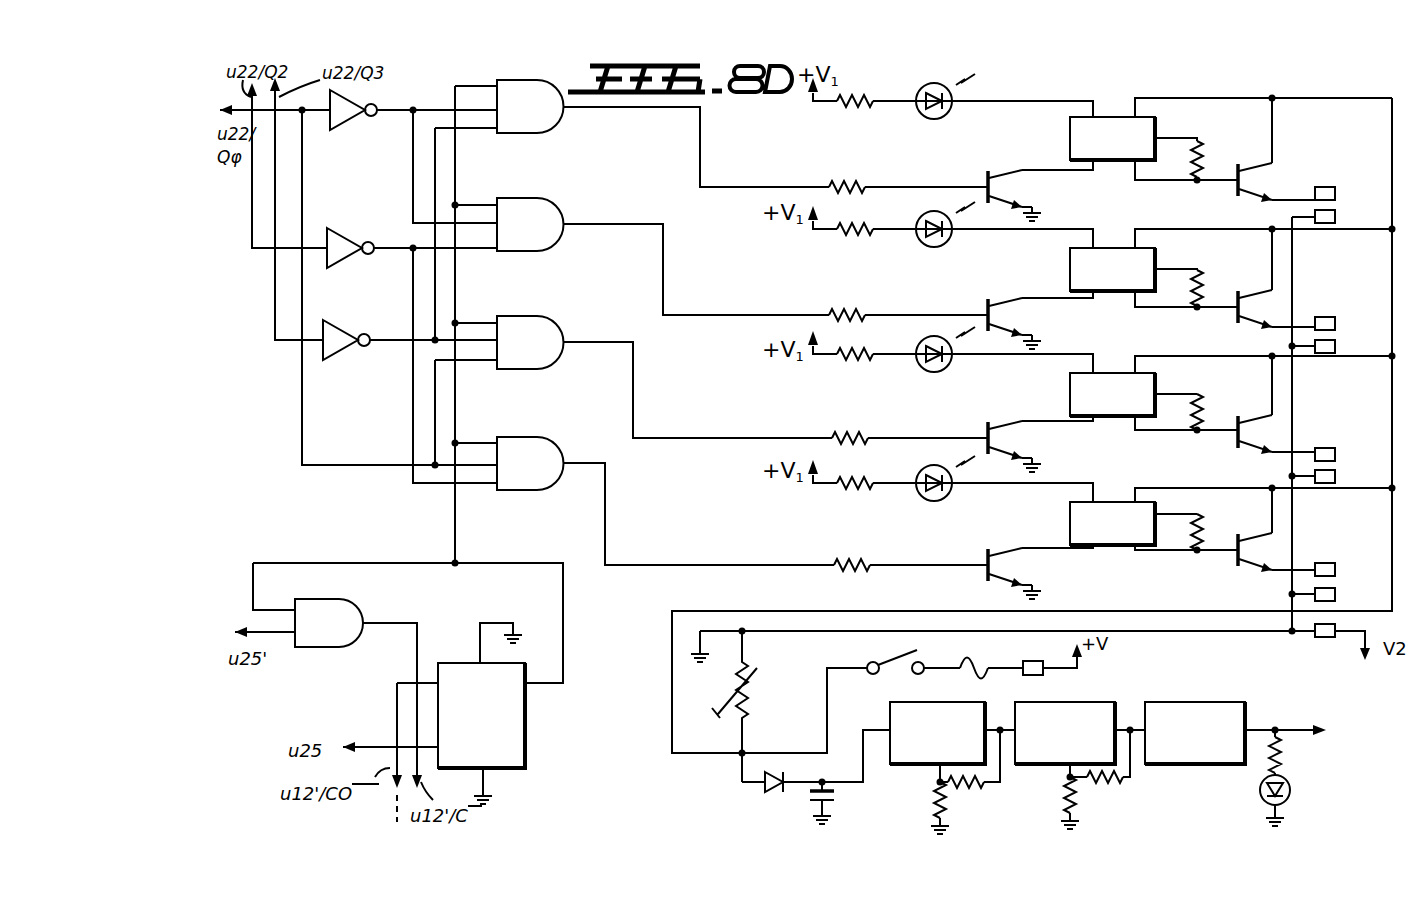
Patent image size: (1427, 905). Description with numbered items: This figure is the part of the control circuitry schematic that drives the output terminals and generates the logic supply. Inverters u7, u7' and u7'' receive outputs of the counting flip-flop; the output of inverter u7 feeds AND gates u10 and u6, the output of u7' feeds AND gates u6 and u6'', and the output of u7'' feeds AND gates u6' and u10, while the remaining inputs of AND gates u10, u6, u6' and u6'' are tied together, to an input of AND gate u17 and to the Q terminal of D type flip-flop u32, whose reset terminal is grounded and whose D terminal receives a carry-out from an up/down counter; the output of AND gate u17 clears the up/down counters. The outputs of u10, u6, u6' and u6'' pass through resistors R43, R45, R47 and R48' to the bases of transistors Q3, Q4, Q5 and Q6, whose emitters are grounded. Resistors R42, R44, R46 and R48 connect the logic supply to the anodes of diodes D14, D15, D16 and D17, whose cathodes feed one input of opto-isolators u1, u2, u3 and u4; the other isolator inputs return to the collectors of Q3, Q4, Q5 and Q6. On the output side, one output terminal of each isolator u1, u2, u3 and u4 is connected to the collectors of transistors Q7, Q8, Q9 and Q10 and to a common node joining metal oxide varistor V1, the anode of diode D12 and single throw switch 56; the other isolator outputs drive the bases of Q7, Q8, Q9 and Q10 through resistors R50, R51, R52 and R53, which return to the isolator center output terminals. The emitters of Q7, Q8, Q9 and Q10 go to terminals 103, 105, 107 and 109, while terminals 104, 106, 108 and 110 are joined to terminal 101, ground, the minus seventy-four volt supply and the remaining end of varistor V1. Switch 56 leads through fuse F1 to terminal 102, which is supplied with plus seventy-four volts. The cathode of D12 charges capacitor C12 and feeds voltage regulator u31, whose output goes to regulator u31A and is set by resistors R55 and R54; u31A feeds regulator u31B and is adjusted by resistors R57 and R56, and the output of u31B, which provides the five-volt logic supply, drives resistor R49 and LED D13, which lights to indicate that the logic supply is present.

The single throw switch 56 is at (906, 661).
The terminal 101 is at (1322, 639).
The terminal 102 is at (1050, 652).
The terminal 103 is at (1346, 190).
The terminal 104 is at (1346, 213).
The terminal 105 is at (1337, 326).
The terminal 106 is at (1337, 349).
The terminal 107 is at (1337, 457).
The terminal 108 is at (1337, 479).
The terminal 109 is at (1337, 572).
The terminal 110 is at (1346, 591).
The opto-isolator u1 is at (1112, 138).
The opto-isolator u2 is at (1112, 269).
The opto-isolator u3 is at (1112, 394).
The opto-isolator u4 is at (1112, 523).
The AND gate u6 is at (530, 224).
The AND gate u6' is at (530, 342).
The AND gate u6'' is at (530, 463).
The inverter u7 is at (353, 125).
The inverter u7' is at (350, 261).
The inverter u7'' is at (350, 356).
The AND gate u10 is at (530, 106).
The AND gate u17 is at (337, 591).
The voltage regulator u31 is at (937, 733).
The voltage regulator u31A is at (1065, 733).
The voltage regulator u31B is at (1195, 733).
The D type flip-flop u32 is at (481, 715).
The transistor Q3 is at (1005, 190).
The transistor Q4 is at (1005, 318).
The transistor Q5 is at (1005, 441).
The transistor Q6 is at (1005, 568).
The transistor Q7 is at (1237, 195).
The transistor Q8 is at (1237, 320).
The transistor Q9 is at (1237, 446).
The transistor Q10 is at (1237, 565).
The resistor R42 is at (868, 107).
The resistor R43 is at (858, 169).
The resistor R44 is at (862, 235).
The resistor R45 is at (858, 295).
The resistor R46 is at (862, 360).
The resistor R47 is at (858, 426).
The resistor R48 is at (848, 500).
The resistor R48' is at (846, 552).
The resistor R49 is at (1292, 757).
The resistor R50 is at (1206, 157).
The resistor R51 is at (1206, 285).
The resistor R52 is at (1206, 408).
The resistor R53 is at (1206, 530).
The resistor R54 is at (934, 792).
The resistor R55 is at (986, 794).
The resistor R56 is at (1062, 796).
The resistor R57 is at (1093, 786).
The diode D12 is at (777, 789).
The LED D13 is at (1296, 792).
The diode D14 is at (930, 120).
The diode D15 is at (930, 248).
The diode D16 is at (930, 373).
The diode D17 is at (930, 502).
The capacitor C12 is at (836, 803).
The fuse F1 is at (974, 661).
The metal oxide varistor V1 is at (726, 706).